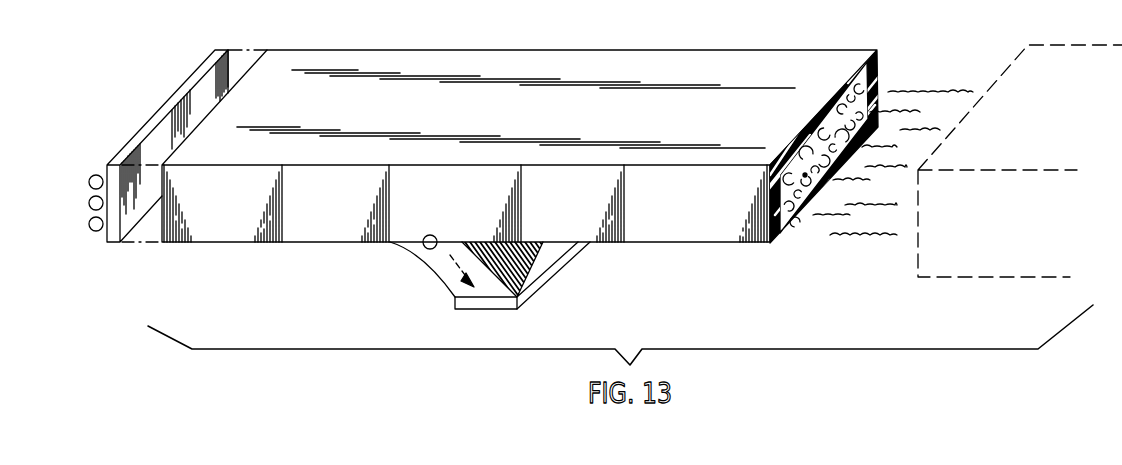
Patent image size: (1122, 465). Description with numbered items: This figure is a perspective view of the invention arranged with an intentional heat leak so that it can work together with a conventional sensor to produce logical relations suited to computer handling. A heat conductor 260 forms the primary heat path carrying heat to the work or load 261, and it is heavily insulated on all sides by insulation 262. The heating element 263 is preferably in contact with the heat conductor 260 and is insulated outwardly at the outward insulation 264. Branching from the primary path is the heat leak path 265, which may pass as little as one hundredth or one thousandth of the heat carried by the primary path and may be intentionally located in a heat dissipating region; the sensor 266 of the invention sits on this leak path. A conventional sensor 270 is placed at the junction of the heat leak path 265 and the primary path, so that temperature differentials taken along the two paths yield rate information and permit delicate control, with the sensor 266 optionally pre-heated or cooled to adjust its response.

The heat conductor 260 is at (805, 175).
The work or load 261 is at (990, 201).
The insulation 262 is at (829, 62).
The heating element 263 is at (194, 74).
The outward insulation 264 is at (90, 177).
The heat leak path 265 is at (437, 278).
The sensor 266 is at (485, 308).
The conventional sensor 270 is at (423, 247).